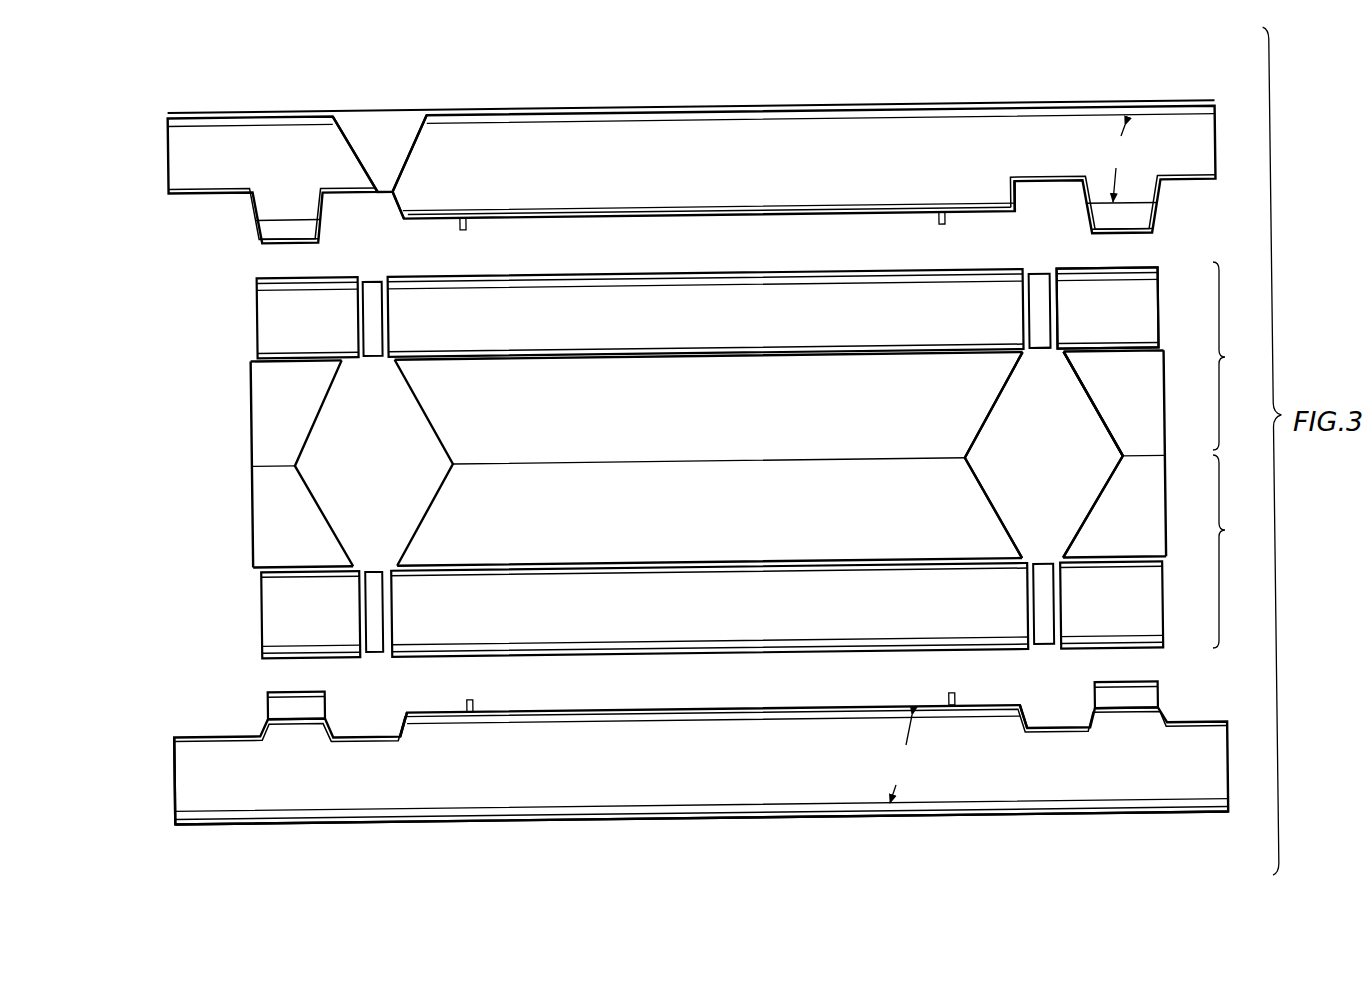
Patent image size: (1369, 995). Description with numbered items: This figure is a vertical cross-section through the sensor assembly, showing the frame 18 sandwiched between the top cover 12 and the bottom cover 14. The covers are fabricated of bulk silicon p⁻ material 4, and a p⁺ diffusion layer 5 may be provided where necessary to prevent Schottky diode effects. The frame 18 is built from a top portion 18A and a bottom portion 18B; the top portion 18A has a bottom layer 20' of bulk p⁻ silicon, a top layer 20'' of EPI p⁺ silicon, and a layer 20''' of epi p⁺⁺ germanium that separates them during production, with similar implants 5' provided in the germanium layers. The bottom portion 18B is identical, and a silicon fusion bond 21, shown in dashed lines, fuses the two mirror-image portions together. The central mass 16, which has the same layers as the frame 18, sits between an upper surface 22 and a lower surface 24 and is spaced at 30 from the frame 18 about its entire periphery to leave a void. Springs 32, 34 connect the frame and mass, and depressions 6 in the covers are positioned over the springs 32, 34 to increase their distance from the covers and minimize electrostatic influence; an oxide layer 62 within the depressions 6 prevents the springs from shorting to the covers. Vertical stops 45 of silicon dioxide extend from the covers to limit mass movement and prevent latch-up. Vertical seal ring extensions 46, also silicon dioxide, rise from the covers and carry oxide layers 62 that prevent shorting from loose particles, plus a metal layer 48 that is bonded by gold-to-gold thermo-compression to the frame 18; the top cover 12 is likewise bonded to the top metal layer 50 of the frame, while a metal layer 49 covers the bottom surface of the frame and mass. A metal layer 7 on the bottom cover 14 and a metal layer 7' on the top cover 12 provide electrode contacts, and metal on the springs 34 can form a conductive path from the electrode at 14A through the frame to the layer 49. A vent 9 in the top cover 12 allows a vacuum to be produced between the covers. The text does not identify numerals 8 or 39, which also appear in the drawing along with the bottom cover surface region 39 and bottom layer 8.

The bulk silicon p⁻ material 4 is at (1203, 142).
The p⁺ diffusion layer 5 is at (1008, 464).
The implants of layers 20''' 5' is at (710, 462).
The depressions 6 is at (390, 208).
The metal layer on bottom cover 7 is at (701, 840).
The metal layer on top cover 7' is at (691, 82).
The bottom layer 8 is at (808, 818).
The vent 9 is at (372, 130).
The top cover 12 is at (1147, 76).
The bottom cover 14 is at (1238, 824).
The electrode 14A is at (178, 738).
The central mass 16 is at (988, 457).
The frame 18 is at (246, 486).
The top portion of frame 18A is at (1246, 356).
The bottom portion of frame 18B is at (1247, 551).
The bottom layer of bulk silicon p⁻ material 20' is at (1088, 404).
The top layer of EPI silicon p⁺ material 20'' is at (1046, 374).
The layer of epi p⁺⁺ germanium 20''' is at (1137, 307).
The silicon fusion bond 21 is at (490, 466).
The upper surface 22 is at (793, 271).
The lower surface 24 is at (689, 665).
The space 30 is at (1034, 444).
The springs 32 is at (373, 283).
The springs 34 is at (1043, 566).
The bottom surface of upper plate 39 is at (697, 217).
The vertical stops 45 is at (468, 232).
The vertical seal ring extensions 46 is at (1160, 698).
The metal layer 48 is at (312, 244).
The metal layer 49 is at (277, 655).
The top metal layer 50 is at (520, 278).
The oxide layers 62 is at (1160, 188).